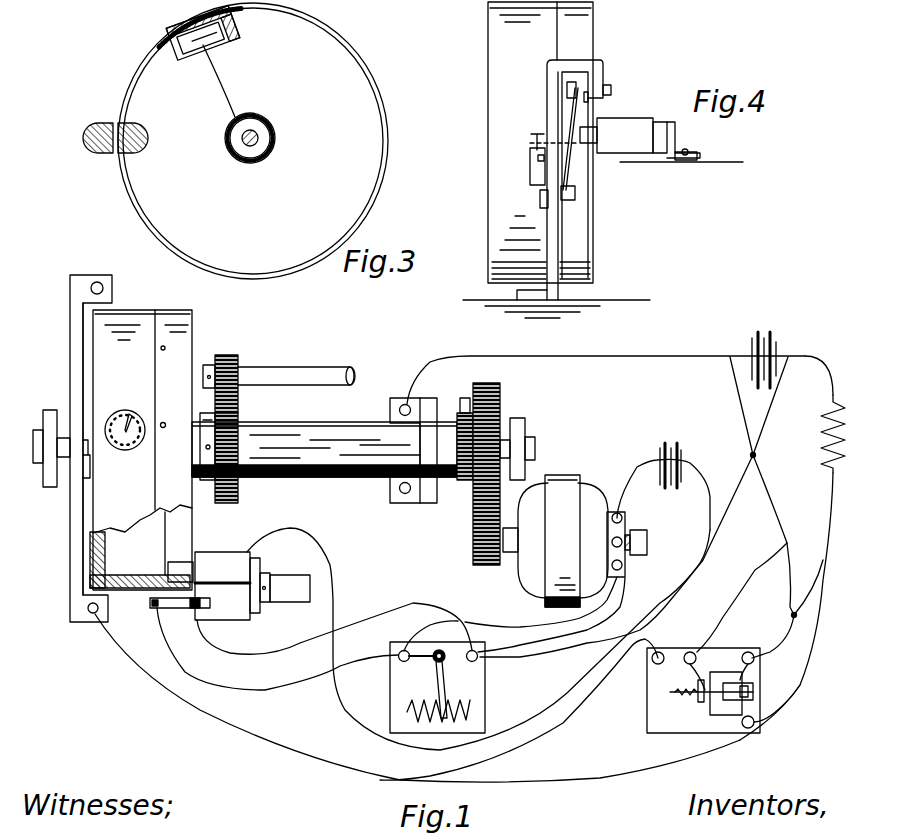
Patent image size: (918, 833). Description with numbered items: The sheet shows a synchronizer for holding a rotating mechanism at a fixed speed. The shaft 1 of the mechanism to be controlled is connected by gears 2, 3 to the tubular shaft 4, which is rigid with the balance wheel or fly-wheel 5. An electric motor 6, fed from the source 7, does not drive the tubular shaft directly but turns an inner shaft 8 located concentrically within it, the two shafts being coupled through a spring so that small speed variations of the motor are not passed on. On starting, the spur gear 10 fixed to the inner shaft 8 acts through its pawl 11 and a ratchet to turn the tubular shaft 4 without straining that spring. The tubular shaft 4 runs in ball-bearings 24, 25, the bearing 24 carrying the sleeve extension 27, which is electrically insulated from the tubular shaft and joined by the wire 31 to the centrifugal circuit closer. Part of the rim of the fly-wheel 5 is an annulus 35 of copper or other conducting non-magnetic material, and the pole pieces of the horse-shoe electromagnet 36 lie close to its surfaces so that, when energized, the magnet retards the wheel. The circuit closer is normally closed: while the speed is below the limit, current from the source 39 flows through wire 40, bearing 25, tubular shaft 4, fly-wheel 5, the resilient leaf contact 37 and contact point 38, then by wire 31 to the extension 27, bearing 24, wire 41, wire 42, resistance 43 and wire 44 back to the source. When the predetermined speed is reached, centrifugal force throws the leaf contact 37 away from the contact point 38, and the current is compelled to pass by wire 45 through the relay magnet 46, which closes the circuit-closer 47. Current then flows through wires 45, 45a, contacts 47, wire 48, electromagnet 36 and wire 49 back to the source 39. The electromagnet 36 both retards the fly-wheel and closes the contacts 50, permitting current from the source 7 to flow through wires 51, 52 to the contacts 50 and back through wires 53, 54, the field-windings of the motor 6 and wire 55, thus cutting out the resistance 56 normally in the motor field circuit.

In FIG. 1, the shaft 1 is at (325, 368).
In FIG. 1, the gear 2 is at (240, 356).
In FIG. 1, the gear 3 is at (239, 492).
In FIG. 3, the tubular shaft 4 is at (262, 163).
In FIG. 1, the tubular shaft 4 is at (330, 478).
In FIG. 3, the fly-wheel 5 is at (253, 141).
In FIG. 4, the fly-wheel 5 is at (488, 198).
In FIG. 1, the fly-wheel 5 is at (125, 447).
In FIG. 1, the electric motor 6 is at (565, 480).
In FIG. 1, the source 7 is at (680, 452).
In FIG. 3, the inner shaft 8 is at (243, 146).
In FIG. 1, the spur gear 10 is at (500, 388).
In FIG. 1, the pawl 11 is at (463, 412).
In FIG. 3, the ball-bearing 24 is at (80, 7).
In FIG. 1, the ball-bearing 24 is at (77, 624).
In FIG. 1, the ball-bearing 25 is at (415, 504).
In FIG. 1, the sleeve extension 27 is at (83, 468).
In FIG. 3, the wire 31 is at (226, 92).
In FIG. 3, the annulus 35 is at (386, 146).
In FIG. 1, the annulus 35 is at (192, 332).
In FIG. 3, the electromagnet 36 is at (147, 135).
In FIG. 4, the electromagnet 36 is at (622, 145).
In FIG. 1, the electromagnet 36 is at (216, 556).
In FIG. 3, the resilient leaf contact 37 is at (190, 64).
In FIG. 3, the contact point 38 is at (236, 20).
In FIG. 1, the source 39 is at (756, 334).
In FIG. 1, the wire 40 is at (650, 357).
In FIG. 1, the wire 41 is at (285, 768).
In FIG. 1, the wire 42 is at (829, 500).
In FIG. 1, the resistance 43 is at (822, 430).
In FIG. 1, the wire 44 is at (805, 355).
In FIG. 1, the wire 45 is at (784, 522).
In FIG. 1, the wire 45a is at (763, 572).
In FIG. 1, the relay magnet 46 is at (727, 673).
In FIG. 1, the circuit-closer 47 is at (693, 700).
In FIG. 1, the wire 48 is at (570, 718).
In FIG. 1, the wire 49 is at (750, 480).
In FIG. 4, the contacts 50 is at (574, 104).
In FIG. 1, the contacts 50 is at (157, 609).
In FIG. 1, the wire 51 is at (686, 570).
In FIG. 1, the wire 52 is at (392, 610).
In FIG. 1, the wire 53 is at (205, 688).
In FIG. 1, the wire 54 is at (497, 625).
In FIG. 1, the wire 55 is at (645, 466).
In FIG. 1, the resistance 56 is at (468, 708).